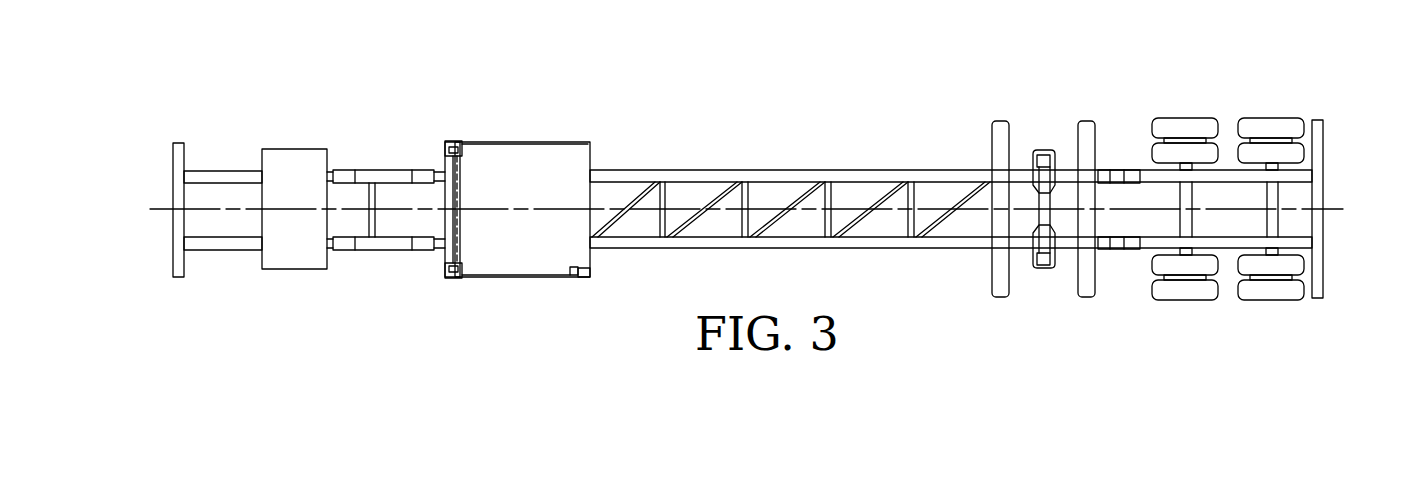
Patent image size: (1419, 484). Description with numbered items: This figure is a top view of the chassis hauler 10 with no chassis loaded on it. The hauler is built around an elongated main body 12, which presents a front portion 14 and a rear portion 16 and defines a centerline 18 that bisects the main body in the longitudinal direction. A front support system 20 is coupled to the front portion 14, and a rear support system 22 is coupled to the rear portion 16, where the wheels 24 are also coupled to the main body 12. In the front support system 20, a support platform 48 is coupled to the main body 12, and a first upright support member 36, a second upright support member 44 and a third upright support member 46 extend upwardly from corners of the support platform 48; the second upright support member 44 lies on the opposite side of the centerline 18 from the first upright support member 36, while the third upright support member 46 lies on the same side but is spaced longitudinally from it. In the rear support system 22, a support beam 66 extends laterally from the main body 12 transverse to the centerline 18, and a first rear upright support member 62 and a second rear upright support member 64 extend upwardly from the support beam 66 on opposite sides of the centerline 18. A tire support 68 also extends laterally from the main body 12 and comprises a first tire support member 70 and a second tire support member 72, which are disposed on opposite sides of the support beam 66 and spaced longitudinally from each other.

The chassis hauler 10 is at (686, 94).
The main body 12 is at (715, 177).
The front portion 14 is at (500, 345).
The rear portion 16 is at (1030, 345).
The centerline 18 is at (847, 207).
The front support system 20 is at (498, 88).
The rear support system 22 is at (1031, 86).
The wheels 24 is at (1183, 125).
The first upright support member 36 is at (448, 278).
The second upright support member 44 is at (447, 142).
The third upright support member 46 is at (585, 278).
The support platform 48 is at (576, 145).
The first rear upright support member 62 is at (1052, 268).
The second rear upright support member 64 is at (1052, 150).
The support beam 66 is at (1038, 240).
The tire support 68 is at (1046, 211).
The first tire support member 70 is at (990, 297).
The second tire support member 72 is at (1097, 297).